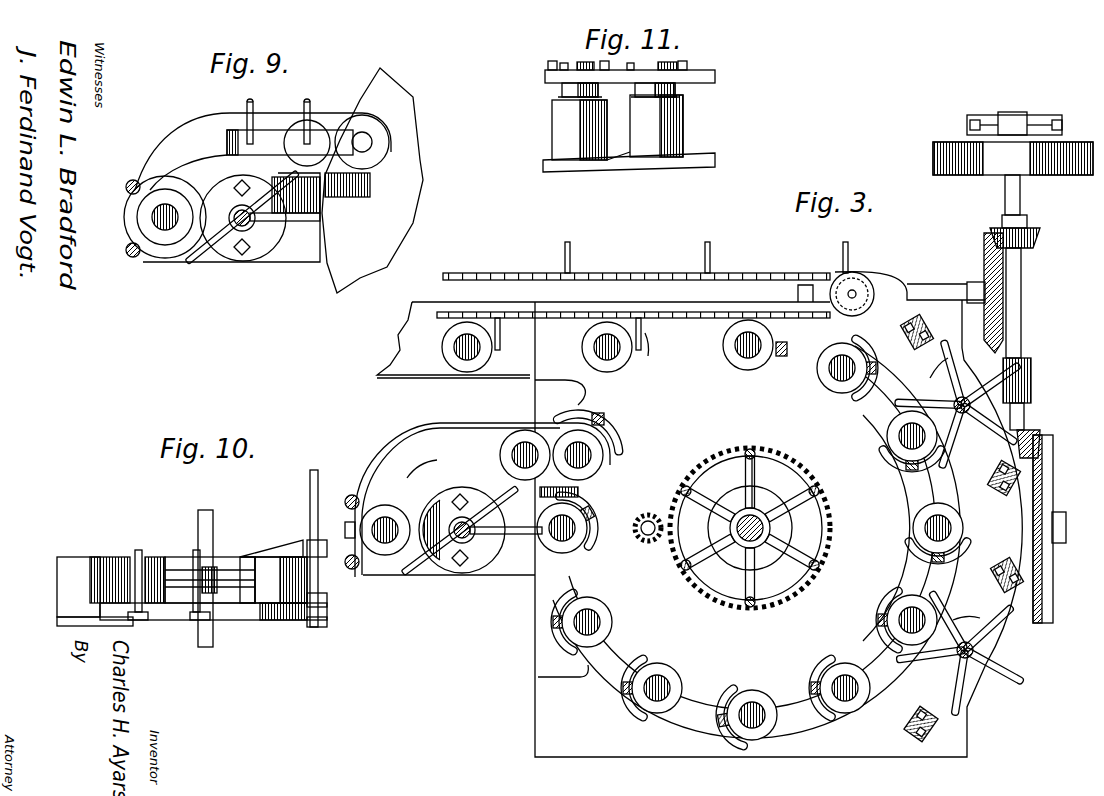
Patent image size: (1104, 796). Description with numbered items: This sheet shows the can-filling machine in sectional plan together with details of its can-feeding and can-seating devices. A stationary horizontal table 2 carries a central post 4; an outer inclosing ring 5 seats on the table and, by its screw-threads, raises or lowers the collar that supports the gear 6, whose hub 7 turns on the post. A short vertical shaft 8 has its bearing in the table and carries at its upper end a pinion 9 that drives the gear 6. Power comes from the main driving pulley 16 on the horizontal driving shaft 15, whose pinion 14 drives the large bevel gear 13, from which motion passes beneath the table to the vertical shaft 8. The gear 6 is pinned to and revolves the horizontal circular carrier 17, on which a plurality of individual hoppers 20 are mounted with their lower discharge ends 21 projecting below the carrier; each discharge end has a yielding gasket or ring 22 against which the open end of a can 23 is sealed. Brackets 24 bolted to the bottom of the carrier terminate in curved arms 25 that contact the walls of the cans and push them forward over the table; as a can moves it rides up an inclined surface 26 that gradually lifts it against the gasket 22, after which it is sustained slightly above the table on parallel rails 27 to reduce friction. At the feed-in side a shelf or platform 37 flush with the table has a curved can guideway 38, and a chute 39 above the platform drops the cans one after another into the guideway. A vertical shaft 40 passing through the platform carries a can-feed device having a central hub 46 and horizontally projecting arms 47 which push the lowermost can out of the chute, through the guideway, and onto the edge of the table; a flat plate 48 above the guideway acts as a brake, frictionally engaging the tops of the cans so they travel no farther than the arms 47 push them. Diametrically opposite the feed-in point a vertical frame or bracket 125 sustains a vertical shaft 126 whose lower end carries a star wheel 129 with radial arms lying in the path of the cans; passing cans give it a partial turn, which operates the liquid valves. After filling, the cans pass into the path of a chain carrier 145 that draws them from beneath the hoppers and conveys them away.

In FIG. 9, the stationary horizontal table 2 is at (408, 195).
In FIG. 11, the stationary horizontal table 2 is at (690, 162).
In FIG. 3, the stationary horizontal table 2 is at (699, 521).
In FIG. 3, the central post 4 is at (785, 529).
In FIG. 3, the outer inclosing ring 5 is at (733, 490).
In FIG. 3, the gear 6 is at (832, 513).
In FIG. 3, the hub 7 is at (767, 495).
In FIG. 3, the short vertical shaft 8 is at (634, 531).
In FIG. 3, the pinion 9 is at (648, 543).
In FIG. 3, the large bevel gear 13 is at (1060, 576).
In FIG. 3, the pinion 14 is at (1036, 433).
In FIG. 3, the horizontal driving shaft 15 is at (1014, 298).
In FIG. 3, the main driving pulley 16 is at (1013, 235).
In FIG. 11, the horizontal circular carrier 17 is at (717, 77).
In FIG. 11, the individual hoppers 20 is at (580, 63).
In FIG. 11, the lower discharge ends 21 is at (560, 87).
In FIG. 11, the gasket or ring 22 is at (567, 96).
In FIG. 9, the can 23 is at (147, 215).
In FIG. 10, the can 23 is at (280, 593).
In FIG. 11, the can 23 is at (560, 127).
In FIG. 3, the can 23 is at (837, 386).
In FIG. 3, the brackets 24 is at (608, 412).
In FIG. 3, the curved arms 25 is at (912, 548).
In FIG. 9, the inclined surface 26 is at (347, 199).
In FIG. 11, the inclined surface 26 is at (620, 158).
In FIG. 3, the inclined surface 26 is at (588, 497).
In FIG. 3, the parallel rails 27 is at (637, 651).
In FIG. 9, the shelf or platform 37 is at (303, 262).
In FIG. 3, the shelf or platform 37 is at (508, 574).
In FIG. 9, the curved can guideway 38 is at (203, 127).
In FIG. 10, the curved can guideway 38 is at (175, 612).
In FIG. 3, the curved can guideway 38 is at (477, 500).
In FIG. 9, the chute 39 is at (163, 262).
In FIG. 10, the chute 39 is at (310, 495).
In FIG. 3, the chute 39 is at (352, 570).
In FIG. 9, the vertical shaft 40 is at (232, 238).
In FIG. 10, the vertical shaft 40 is at (203, 520).
In FIG. 3, the vertical shaft 40 is at (458, 520).
In FIG. 9, the central hub 46 is at (253, 227).
In FIG. 10, the central hub 46 is at (217, 593).
In FIG. 3, the central hub 46 is at (478, 543).
In FIG. 9, the arms 47 is at (189, 266).
In FIG. 10, the arms 47 is at (180, 577).
In FIG. 3, the arms 47 is at (497, 505).
In FIG. 9, the flat plate 48 is at (333, 106).
In FIG. 10, the flat plate 48 is at (105, 555).
In FIG. 3, the vertical frame or bracket 125 is at (1000, 495).
In FIG. 3, the vertical shaft 126 is at (964, 416).
In FIG. 3, the star wheel 129 is at (948, 362).
In FIG. 3, the chain carrier 145 is at (647, 264).